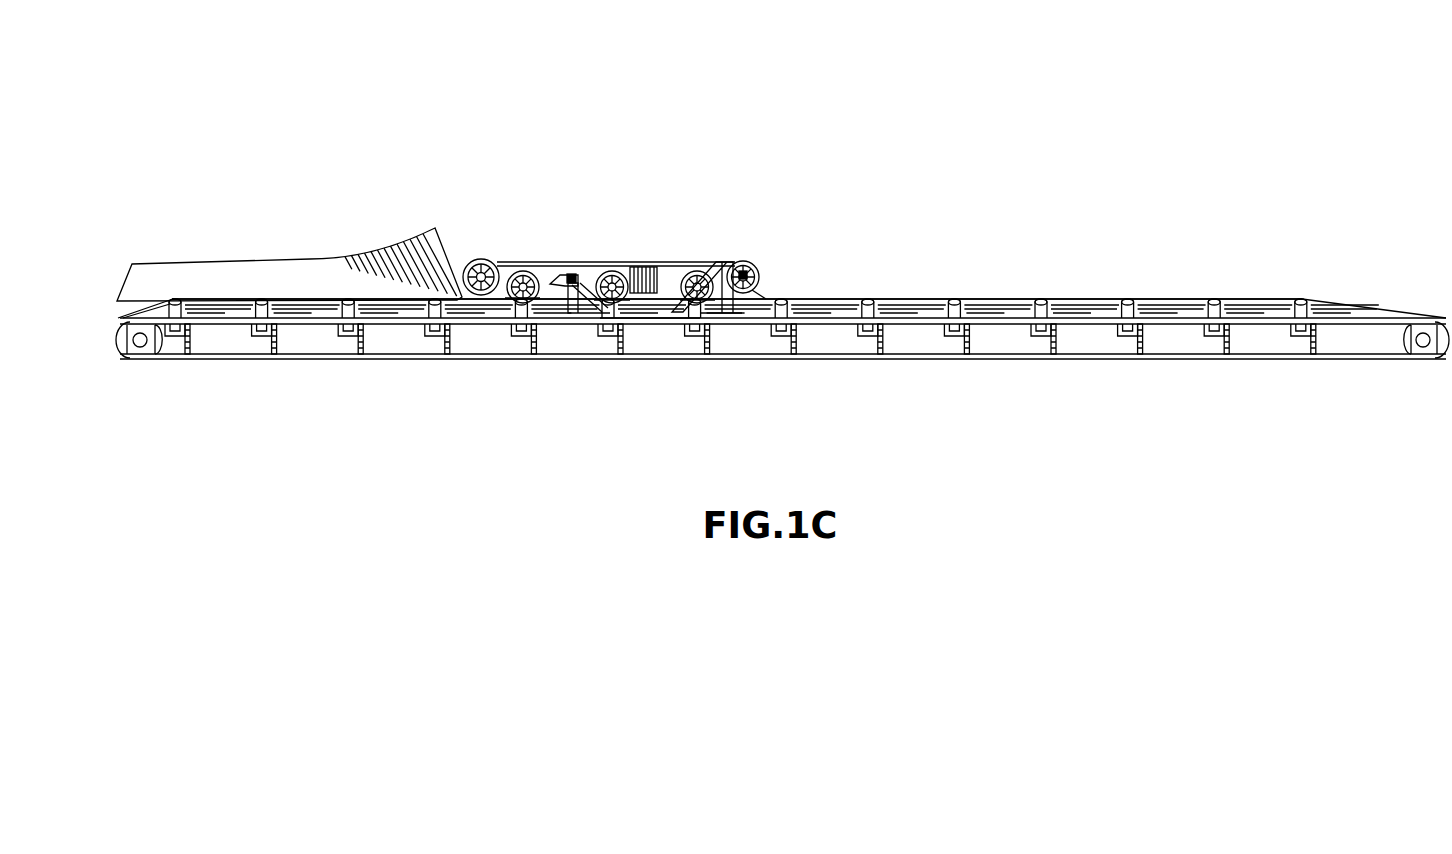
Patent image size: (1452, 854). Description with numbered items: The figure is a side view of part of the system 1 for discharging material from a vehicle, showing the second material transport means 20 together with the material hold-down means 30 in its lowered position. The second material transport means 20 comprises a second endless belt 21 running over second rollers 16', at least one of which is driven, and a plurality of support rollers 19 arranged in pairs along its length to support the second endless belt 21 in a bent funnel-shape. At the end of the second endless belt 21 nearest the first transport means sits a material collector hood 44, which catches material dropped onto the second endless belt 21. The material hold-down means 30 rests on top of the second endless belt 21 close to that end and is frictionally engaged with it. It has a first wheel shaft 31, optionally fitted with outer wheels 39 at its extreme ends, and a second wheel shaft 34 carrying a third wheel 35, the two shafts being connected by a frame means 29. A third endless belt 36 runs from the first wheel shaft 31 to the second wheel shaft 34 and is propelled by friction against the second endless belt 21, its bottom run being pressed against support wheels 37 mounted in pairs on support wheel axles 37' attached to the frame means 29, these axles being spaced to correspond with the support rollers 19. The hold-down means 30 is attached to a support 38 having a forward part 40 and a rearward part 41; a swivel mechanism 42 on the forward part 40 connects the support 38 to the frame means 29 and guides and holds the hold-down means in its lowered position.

The system for discharging material 1 is at (840, 106).
The second rollers 16' is at (782, 371).
The support rollers 19 is at (868, 337).
The second material transport means 20 is at (969, 266).
The second endless belt 21 is at (1148, 298).
The frame means 29 is at (650, 318).
The material hold-down means 30 is at (697, 232).
The first wheel shaft 31 is at (476, 258).
The second wheel shaft 34 is at (763, 250).
The third wheel 35 is at (746, 256).
The third endless belt 36 is at (712, 258).
The support wheels 37 is at (610, 223).
The support wheel axles 37' is at (602, 349).
The support 38 is at (632, 300).
The outer wheels 39 is at (466, 260).
The forward part 40 is at (599, 261).
The rearward part 41 is at (760, 288).
The swivel mechanism 42 is at (550, 260).
The material collector hood 44 is at (256, 277).